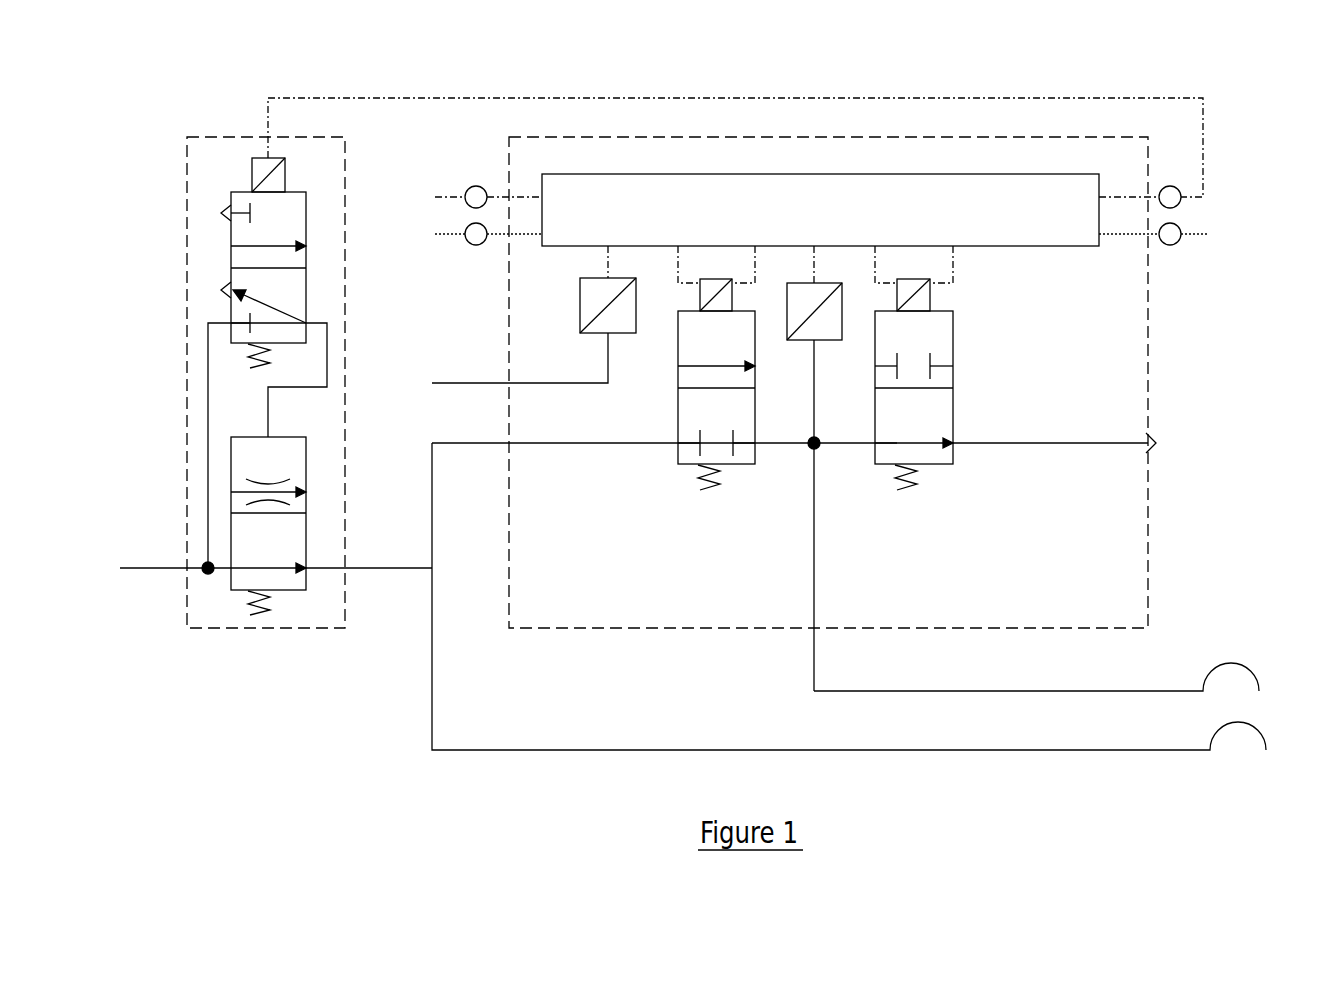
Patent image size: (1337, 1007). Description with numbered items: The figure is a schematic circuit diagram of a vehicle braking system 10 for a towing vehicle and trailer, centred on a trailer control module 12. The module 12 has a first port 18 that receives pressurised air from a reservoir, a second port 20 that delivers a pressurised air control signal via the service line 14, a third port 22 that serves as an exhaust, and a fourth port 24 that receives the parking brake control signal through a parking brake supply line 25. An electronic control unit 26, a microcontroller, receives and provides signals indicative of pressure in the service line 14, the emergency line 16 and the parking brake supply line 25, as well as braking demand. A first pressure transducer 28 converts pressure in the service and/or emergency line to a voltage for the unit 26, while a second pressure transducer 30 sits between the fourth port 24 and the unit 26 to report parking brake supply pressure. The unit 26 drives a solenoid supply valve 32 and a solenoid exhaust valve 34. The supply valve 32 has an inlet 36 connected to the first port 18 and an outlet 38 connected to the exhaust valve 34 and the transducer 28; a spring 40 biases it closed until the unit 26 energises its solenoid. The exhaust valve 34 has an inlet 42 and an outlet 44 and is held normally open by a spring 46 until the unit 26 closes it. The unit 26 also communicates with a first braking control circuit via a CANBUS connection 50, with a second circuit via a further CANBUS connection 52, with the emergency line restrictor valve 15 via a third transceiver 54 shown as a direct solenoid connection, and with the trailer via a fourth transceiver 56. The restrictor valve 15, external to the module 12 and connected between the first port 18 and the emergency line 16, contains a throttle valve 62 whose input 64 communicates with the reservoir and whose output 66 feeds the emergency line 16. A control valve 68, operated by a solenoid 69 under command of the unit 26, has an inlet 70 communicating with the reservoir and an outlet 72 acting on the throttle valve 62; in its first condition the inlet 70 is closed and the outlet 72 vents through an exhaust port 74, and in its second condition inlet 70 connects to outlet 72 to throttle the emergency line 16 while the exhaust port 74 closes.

The vehicle braking system 10 is at (378, 750).
The trailer control module 12 is at (380, 652).
The service line 14 is at (1010, 690).
The emergency line restrictor valve 15 is at (197, 628).
The emergency line 16 is at (875, 750).
The first port 18 is at (262, 569).
The second port 20 is at (814, 628).
The third port 22 is at (1152, 450).
The fourth port 24 is at (509, 380).
The parking brake supply line 25 is at (530, 383).
The electronic control unit 26 is at (958, 180).
The first pressure transducer 28 is at (800, 340).
The second pressure transducer 30 is at (580, 300).
The supply valve 32 is at (676, 413).
The exhaust valve 34 is at (955, 404).
The inlet 36 is at (678, 448).
The outlet 38 is at (755, 446).
The spring 40 is at (710, 490).
The inlet 42 is at (875, 447).
The outlet 44 is at (955, 445).
The spring 46 is at (910, 490).
The CANBUS connection 50 is at (476, 186).
The further CANBUS connection 52 is at (466, 240).
The third transceiver 54 is at (1180, 205).
The fourth transceiver 56 is at (1178, 242).
The throttle valve 62 is at (306, 462).
The input 64 is at (228, 568).
The output 66 is at (306, 570).
The control valve 68 is at (306, 192).
The solenoid 69 is at (252, 175).
The inlet 70 is at (228, 323).
The outlet 72 is at (306, 322).
The exhaust port 74 is at (227, 285).